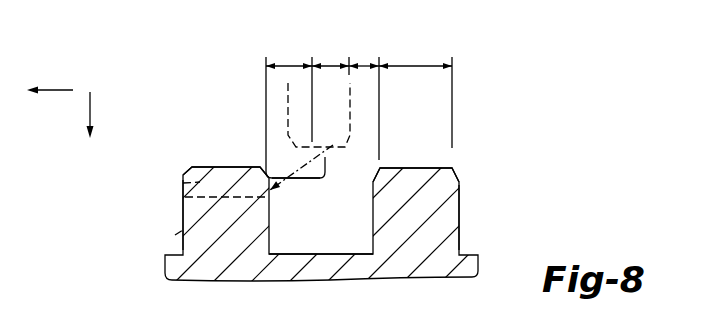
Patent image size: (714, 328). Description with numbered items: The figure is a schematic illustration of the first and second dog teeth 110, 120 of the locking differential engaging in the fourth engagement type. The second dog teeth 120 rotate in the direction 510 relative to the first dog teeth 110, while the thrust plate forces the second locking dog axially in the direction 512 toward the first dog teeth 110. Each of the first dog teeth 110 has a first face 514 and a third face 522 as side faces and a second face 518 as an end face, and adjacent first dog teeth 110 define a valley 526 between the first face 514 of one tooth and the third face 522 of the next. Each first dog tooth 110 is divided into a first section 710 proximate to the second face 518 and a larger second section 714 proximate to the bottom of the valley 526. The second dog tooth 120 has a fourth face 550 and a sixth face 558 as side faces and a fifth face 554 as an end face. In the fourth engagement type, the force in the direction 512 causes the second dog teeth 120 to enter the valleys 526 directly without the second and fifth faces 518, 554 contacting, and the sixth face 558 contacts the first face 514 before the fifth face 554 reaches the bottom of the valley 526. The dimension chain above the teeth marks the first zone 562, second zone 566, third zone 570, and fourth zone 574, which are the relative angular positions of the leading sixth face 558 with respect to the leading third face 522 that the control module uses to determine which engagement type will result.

The first dog teeth 110 is at (193, 202).
The second dog teeth 120 is at (277, 108).
The direction 510 is at (58, 90).
The direction 512 is at (92, 108).
The first face 514 is at (460, 215).
The second face 518 is at (203, 167).
The third face 522 is at (183, 227).
The valley 526 is at (333, 257).
The fourth face 550 is at (325, 157).
The fifth face 554 is at (308, 178).
The sixth face 558 is at (263, 121).
The first zone 562 is at (420, 65).
The second zone 566 is at (362, 65).
The third zone 570 is at (330, 65).
The fourth zone 574 is at (290, 65).
The first section 710 is at (183, 183).
The second section 714 is at (183, 230).